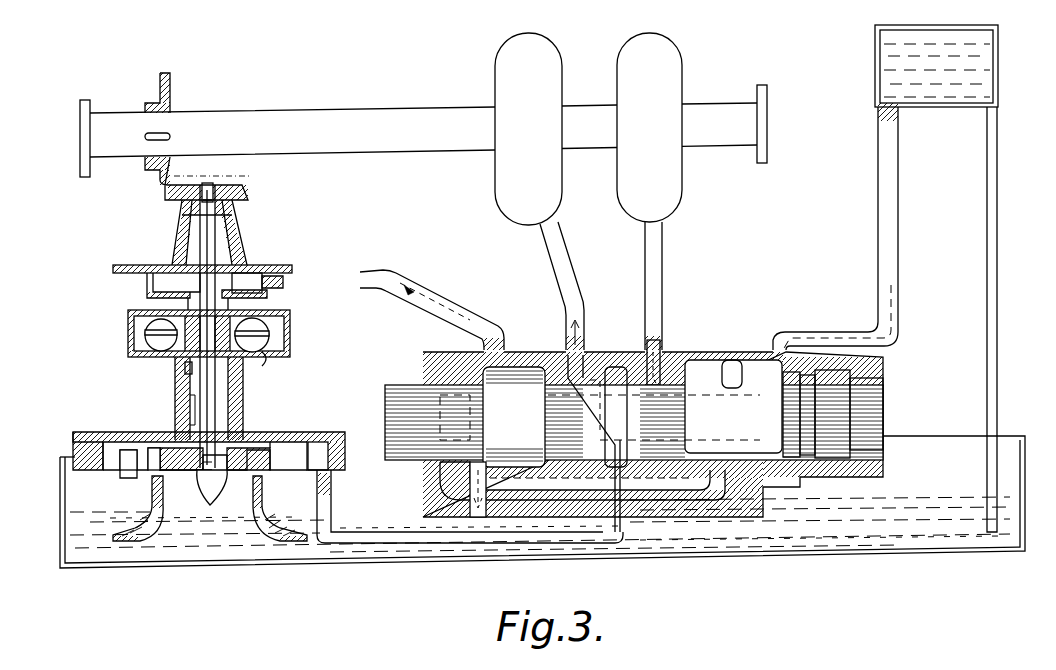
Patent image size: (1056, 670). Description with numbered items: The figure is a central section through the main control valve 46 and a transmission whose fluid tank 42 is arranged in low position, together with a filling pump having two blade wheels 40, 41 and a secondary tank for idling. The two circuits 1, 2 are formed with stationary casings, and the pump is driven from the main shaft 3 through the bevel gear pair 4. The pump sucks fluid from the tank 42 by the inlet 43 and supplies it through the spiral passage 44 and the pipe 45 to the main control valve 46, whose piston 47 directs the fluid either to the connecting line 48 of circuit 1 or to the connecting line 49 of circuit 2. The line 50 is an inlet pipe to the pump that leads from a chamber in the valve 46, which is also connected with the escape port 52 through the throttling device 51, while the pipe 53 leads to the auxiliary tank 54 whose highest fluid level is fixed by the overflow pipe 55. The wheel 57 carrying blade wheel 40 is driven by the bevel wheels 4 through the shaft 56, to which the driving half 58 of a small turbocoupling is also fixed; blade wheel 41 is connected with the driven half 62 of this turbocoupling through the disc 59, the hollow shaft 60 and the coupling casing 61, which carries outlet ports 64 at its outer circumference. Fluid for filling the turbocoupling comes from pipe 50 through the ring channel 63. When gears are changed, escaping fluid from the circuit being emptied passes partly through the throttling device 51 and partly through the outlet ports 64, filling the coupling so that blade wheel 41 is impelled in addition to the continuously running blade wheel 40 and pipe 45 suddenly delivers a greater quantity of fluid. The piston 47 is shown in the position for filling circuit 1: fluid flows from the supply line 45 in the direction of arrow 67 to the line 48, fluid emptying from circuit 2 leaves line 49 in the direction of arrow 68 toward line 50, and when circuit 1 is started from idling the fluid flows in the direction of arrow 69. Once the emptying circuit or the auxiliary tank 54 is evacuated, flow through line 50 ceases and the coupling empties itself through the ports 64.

The circuit 1 is at (528, 129).
The circuit 2 is at (649, 127).
The main shaft 3 is at (352, 118).
The bevel gear pair 4 is at (172, 190).
The blade wheel 40 is at (155, 453).
The blade wheel 41 is at (128, 455).
The tank 42 is at (768, 552).
The inlet 43 is at (273, 528).
The spiral passage 44 is at (322, 452).
The pipe 45 is at (553, 545).
The main control valve 46 is at (600, 360).
The piston 47 is at (514, 417).
The connecting line 48 is at (576, 256).
The connecting line 49 is at (664, 257).
The line 50 is at (398, 280).
The throttling device 51 is at (488, 466).
The escape port 52 is at (476, 520).
The pipe 53 is at (900, 212).
The auxiliary tank 54 is at (972, 104).
The overflow pipe 55 is at (985, 166).
The shaft 56 is at (205, 236).
The wheel 57 is at (230, 462).
The driving half 58 is at (268, 344).
The disc 59 is at (262, 437).
The hollow shaft 60 is at (235, 410).
The coupling casing 61 is at (262, 362).
The driven half 62 is at (262, 326).
The ring channel 63 is at (202, 255).
The outlet ports 64 is at (270, 340).
The arrow 67 is at (634, 434).
The arrow 68 is at (666, 340).
The arrow 69 is at (893, 293).